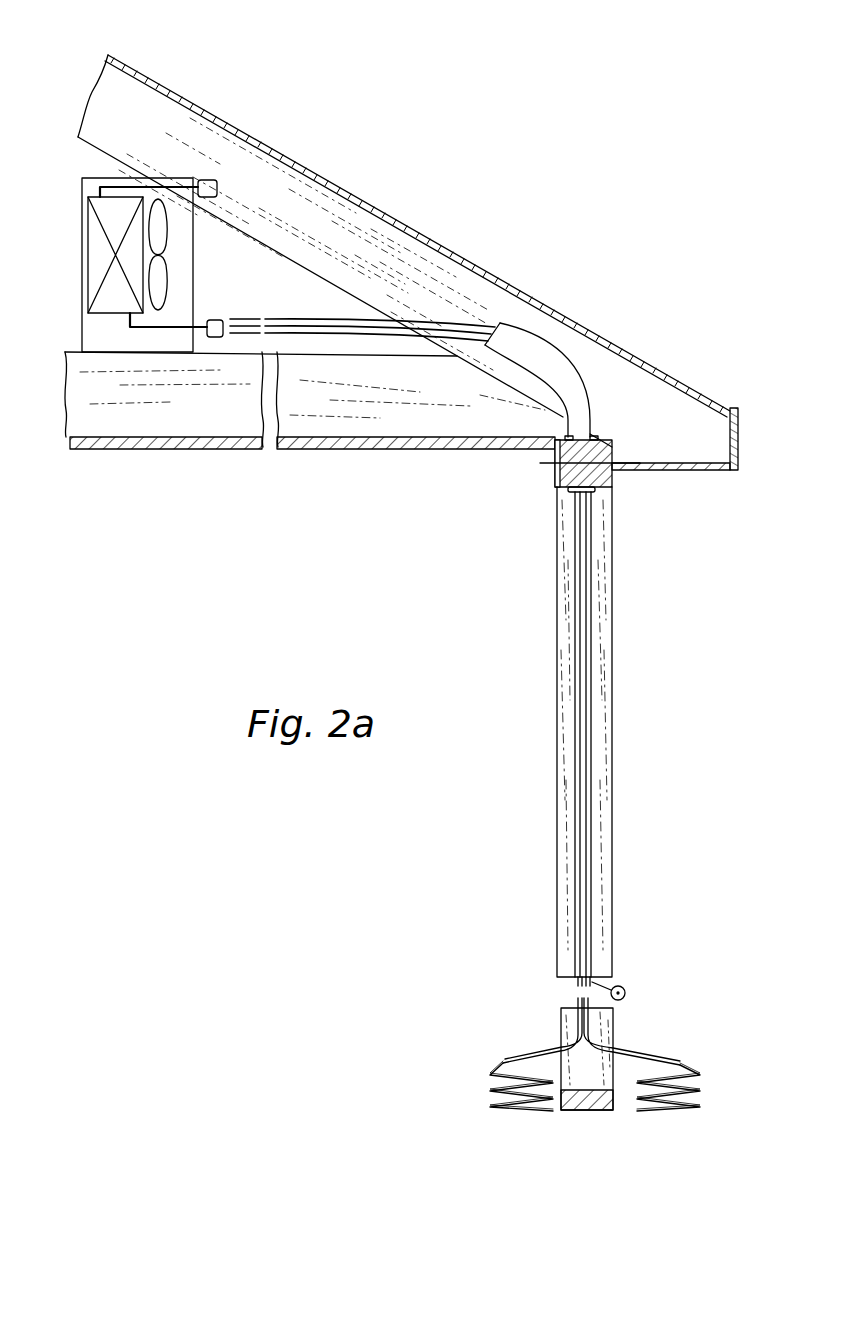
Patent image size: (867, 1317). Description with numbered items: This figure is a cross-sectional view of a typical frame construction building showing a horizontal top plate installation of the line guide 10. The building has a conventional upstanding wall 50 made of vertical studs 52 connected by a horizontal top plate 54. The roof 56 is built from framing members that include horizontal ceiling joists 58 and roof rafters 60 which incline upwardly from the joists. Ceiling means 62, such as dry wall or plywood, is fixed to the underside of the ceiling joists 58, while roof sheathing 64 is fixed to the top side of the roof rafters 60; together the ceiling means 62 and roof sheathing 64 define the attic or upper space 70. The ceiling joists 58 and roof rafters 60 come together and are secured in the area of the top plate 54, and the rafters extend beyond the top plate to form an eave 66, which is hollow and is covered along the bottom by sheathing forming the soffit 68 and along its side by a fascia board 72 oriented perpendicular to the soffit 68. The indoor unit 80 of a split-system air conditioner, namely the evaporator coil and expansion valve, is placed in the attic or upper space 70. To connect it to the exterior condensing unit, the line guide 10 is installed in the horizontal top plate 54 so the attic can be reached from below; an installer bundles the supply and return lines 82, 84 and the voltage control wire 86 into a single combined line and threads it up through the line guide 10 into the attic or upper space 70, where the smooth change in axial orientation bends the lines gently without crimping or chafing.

The line guide 10 is at (579, 361).
The upstanding wall 50 is at (634, 201).
The vertical studs 52 is at (613, 598).
The horizontal top plate 54 is at (612, 447).
The roof 56 is at (494, 266).
The ceiling joists 58 is at (393, 410).
The roof rafters 60 is at (366, 256).
The ceiling means 62 is at (398, 448).
The roof sheathing 64 is at (307, 165).
The eave 66 is at (681, 436).
The soffit 68 is at (680, 472).
The attic or upper space 70 is at (265, 300).
The fascia board 72 is at (740, 436).
The indoor unit 80 is at (82, 240).
The supply line 82 is at (503, 1063).
The return line 84 is at (680, 1065).
The voltage control wire 86 is at (625, 998).